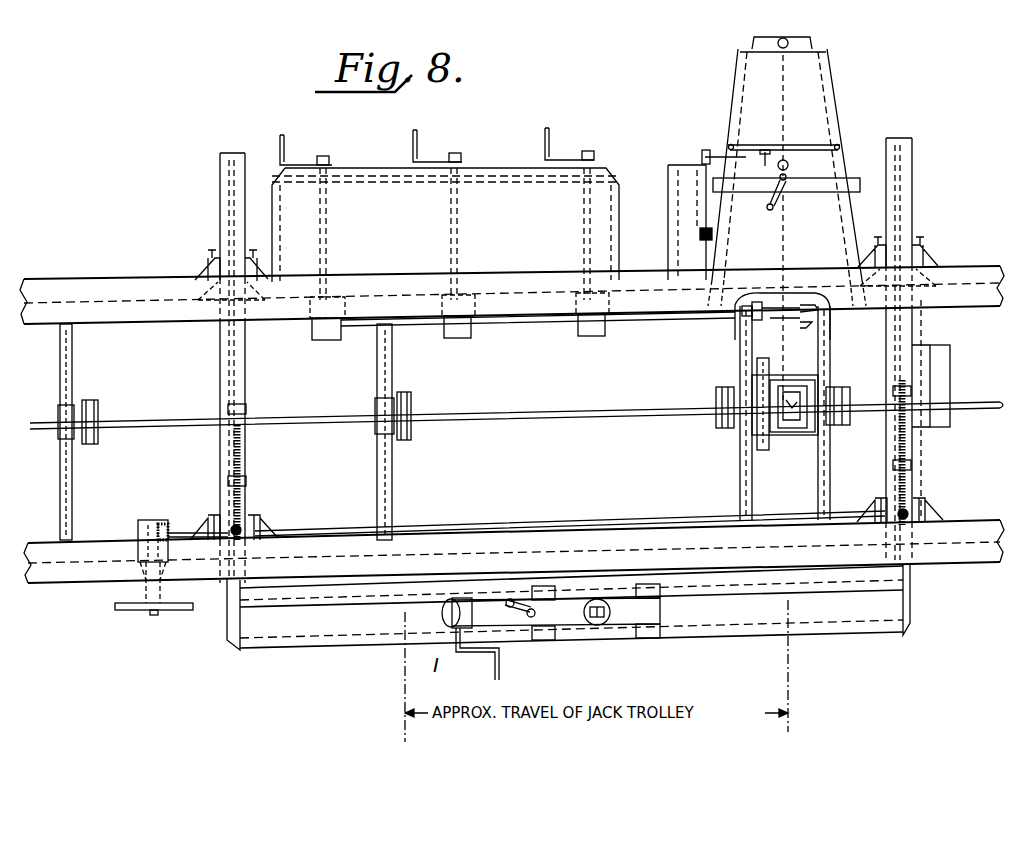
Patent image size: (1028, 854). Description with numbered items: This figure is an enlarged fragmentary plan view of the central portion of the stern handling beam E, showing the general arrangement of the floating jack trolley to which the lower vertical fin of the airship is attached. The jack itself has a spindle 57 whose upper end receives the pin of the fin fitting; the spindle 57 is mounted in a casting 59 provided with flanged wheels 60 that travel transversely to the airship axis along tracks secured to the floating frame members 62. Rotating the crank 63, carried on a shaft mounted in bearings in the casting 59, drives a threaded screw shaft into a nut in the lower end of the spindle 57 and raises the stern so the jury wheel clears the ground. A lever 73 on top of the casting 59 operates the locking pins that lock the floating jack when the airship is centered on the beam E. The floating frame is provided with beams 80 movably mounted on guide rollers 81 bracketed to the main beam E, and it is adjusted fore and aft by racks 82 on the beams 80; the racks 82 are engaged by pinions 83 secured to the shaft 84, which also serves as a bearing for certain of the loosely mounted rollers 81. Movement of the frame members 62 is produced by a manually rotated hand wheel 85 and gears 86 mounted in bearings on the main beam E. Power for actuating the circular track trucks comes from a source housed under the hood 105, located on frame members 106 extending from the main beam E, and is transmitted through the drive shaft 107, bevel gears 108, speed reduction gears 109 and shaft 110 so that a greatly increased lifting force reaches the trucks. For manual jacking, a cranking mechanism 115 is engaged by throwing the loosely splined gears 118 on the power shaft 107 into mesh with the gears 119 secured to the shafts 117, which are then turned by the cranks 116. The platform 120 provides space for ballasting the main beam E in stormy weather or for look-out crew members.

The spindle 57 is at (602, 600).
The casting 59 is at (622, 625).
The flanged wheels 60 is at (545, 585).
The floating frame members 62 is at (750, 632).
The crank 63 is at (488, 668).
The lever 73 is at (520, 600).
The beams 80 is at (221, 196).
The guide rollers 81 is at (226, 268).
The racks 82 is at (243, 463).
The pinions 83 is at (232, 524).
The shaft 84 is at (308, 531).
The hand wheel 85 is at (146, 612).
The gears 86 is at (152, 518).
The hood 105 is at (767, 171).
The frame members 106 is at (846, 208).
The drive shaft 107 is at (781, 250).
The bevel gears 108 is at (818, 386).
The speed reduction gears 109 is at (776, 452).
The shaft 110 is at (597, 404).
The cranking mechanism 115 is at (490, 330).
The cranks 116 is at (285, 146).
The shafts 117 is at (425, 328).
The loosely splined gears 118 is at (812, 330).
The gears 119 is at (745, 316).
The platform 120 is at (445, 234).
The stern handling beam E is at (143, 284).